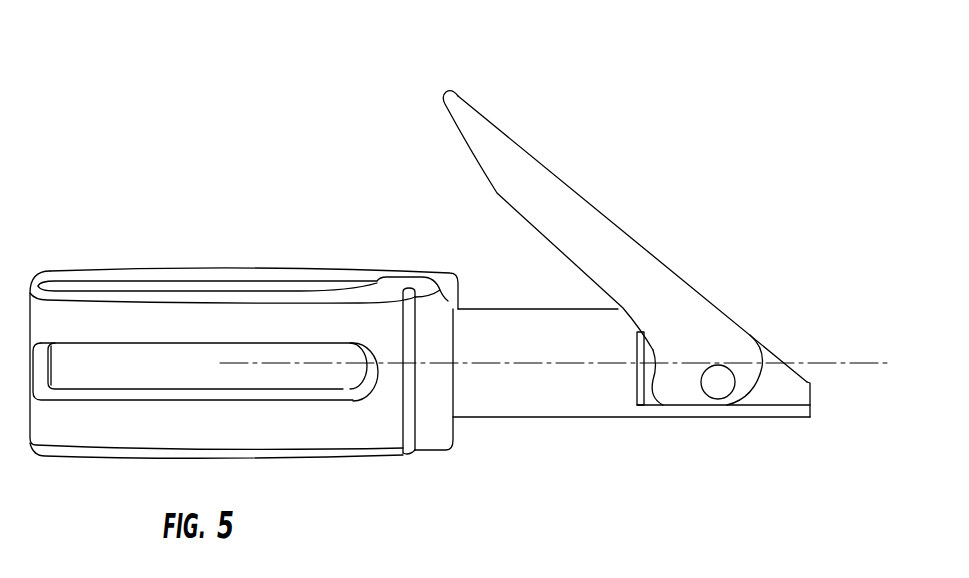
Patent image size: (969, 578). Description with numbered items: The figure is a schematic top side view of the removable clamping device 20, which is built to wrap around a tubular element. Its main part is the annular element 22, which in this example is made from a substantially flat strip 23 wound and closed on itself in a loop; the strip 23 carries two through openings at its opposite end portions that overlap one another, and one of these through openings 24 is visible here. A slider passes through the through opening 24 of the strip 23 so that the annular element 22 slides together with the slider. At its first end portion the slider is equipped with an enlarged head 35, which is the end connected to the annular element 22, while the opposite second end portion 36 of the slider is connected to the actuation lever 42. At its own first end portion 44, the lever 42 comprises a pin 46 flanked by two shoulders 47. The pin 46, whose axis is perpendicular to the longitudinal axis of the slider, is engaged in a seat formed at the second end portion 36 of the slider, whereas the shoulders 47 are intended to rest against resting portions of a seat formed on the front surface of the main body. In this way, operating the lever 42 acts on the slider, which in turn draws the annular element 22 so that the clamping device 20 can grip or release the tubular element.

The removable clamping device 20 is at (662, 112).
The annular element 22 is at (30, 423).
The strip 23 is at (112, 318).
The through opening 24 is at (452, 310).
The enlarged head 35 is at (398, 437).
The second end portion 36 is at (775, 380).
The actuation lever 42 is at (645, 250).
The first end portion 44 is at (720, 347).
The pin 46 is at (718, 383).
The shoulders 47 is at (638, 390).